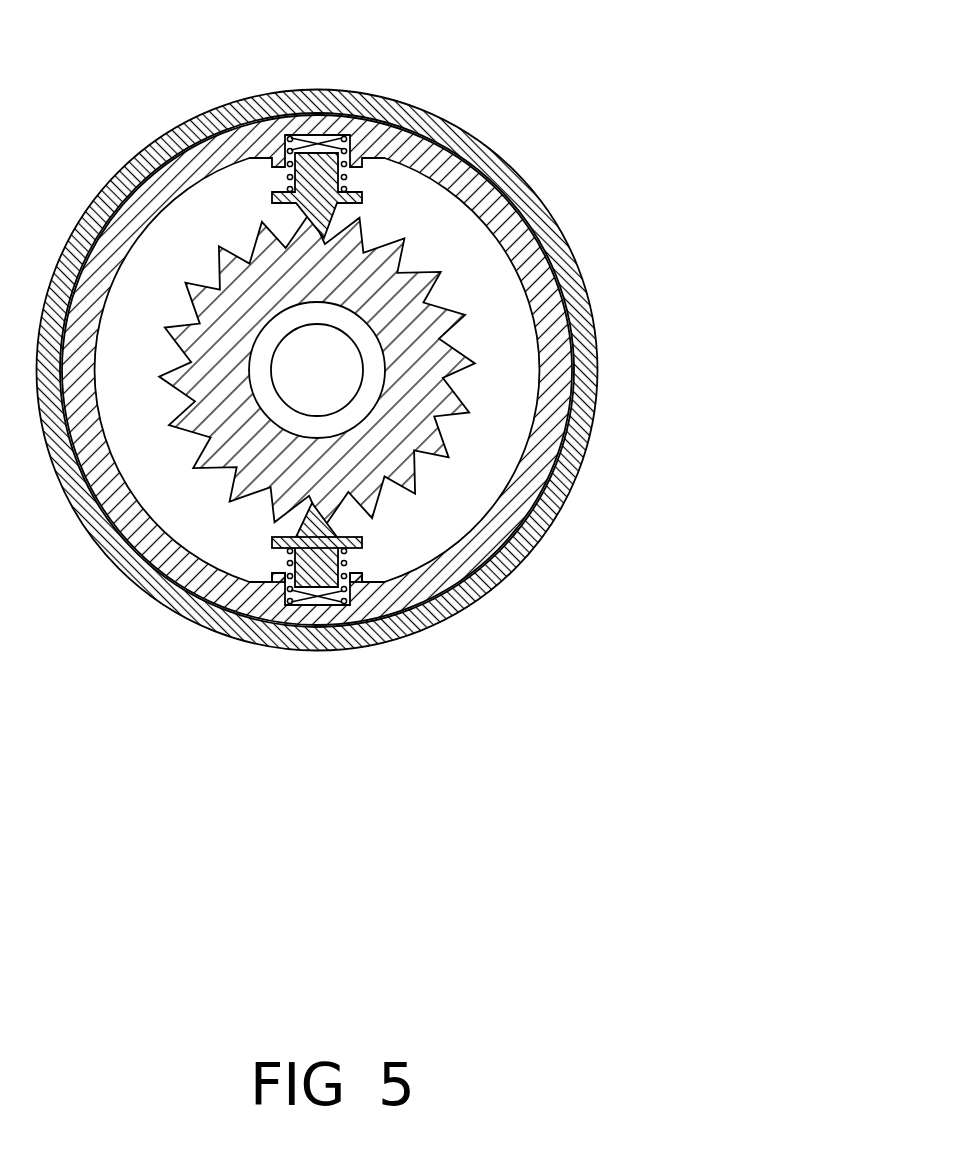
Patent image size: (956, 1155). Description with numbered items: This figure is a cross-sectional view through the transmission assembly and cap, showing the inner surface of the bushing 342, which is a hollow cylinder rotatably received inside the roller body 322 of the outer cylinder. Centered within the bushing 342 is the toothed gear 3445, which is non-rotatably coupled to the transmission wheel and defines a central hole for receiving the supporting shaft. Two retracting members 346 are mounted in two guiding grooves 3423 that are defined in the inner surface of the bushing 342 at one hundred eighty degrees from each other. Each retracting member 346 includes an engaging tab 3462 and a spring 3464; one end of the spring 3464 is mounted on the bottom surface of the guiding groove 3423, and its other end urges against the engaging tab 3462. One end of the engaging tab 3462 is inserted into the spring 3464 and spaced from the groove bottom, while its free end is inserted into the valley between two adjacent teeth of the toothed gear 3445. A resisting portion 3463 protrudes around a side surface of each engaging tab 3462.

The roller body 322 is at (571, 287).
The bushing 342 is at (553, 424).
The guiding groove 3423 is at (344, 577).
The toothed gear 3445 is at (418, 292).
The retracting member 346 is at (308, 158).
The engaging tab 3462 is at (313, 562).
The resisting portion 3463 is at (362, 545).
The spring 3464 is at (288, 592).